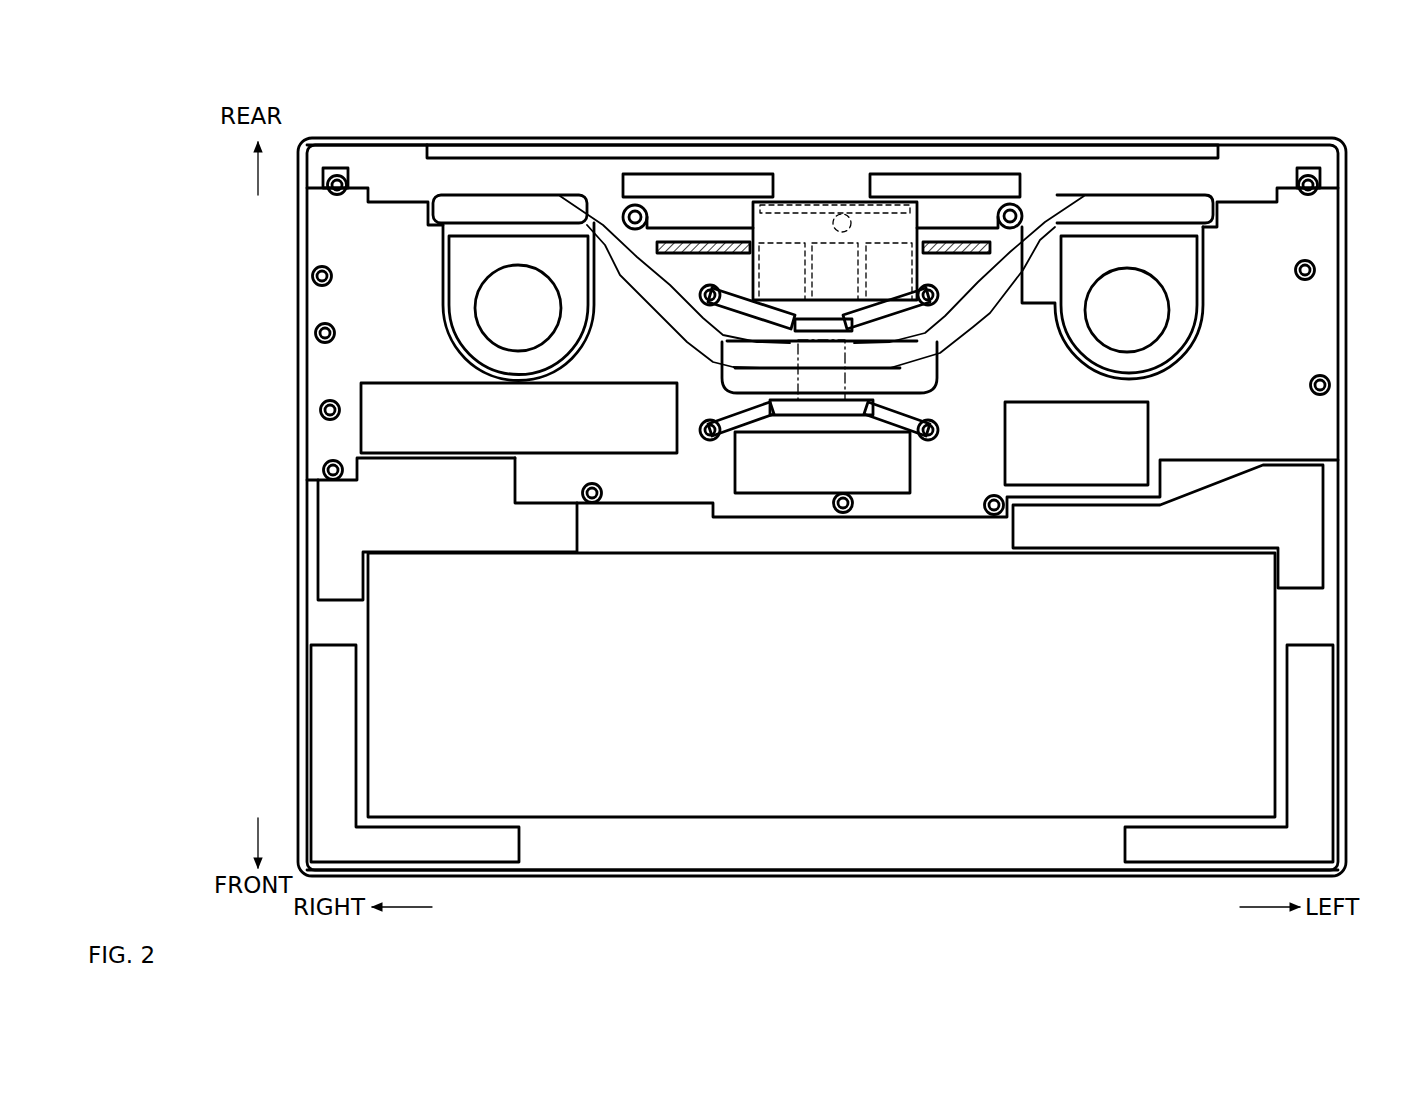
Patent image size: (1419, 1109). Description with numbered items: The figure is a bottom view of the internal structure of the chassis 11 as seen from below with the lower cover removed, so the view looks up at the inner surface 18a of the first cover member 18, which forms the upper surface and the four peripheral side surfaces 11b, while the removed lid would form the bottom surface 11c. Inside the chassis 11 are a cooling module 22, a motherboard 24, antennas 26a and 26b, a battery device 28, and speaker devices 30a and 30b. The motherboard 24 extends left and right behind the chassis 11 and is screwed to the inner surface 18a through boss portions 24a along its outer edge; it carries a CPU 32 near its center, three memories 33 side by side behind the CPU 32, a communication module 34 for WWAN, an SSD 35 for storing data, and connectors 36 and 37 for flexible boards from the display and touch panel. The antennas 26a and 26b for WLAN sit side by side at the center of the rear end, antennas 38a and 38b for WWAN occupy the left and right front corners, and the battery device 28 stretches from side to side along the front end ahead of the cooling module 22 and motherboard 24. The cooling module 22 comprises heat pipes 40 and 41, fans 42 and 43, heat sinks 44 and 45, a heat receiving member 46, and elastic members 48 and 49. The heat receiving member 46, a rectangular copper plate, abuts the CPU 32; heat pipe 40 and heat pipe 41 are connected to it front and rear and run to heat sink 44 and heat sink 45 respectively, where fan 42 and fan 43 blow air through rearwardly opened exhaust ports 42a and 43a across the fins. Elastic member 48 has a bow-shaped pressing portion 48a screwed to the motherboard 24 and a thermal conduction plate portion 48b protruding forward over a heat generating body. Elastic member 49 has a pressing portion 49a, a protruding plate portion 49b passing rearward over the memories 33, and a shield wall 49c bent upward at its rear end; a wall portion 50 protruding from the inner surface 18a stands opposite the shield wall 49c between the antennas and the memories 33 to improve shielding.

The chassis 11 is at (303, 118).
The peripheral side surfaces 11b is at (318, 622).
The bottom surface 11c is at (381, 141).
The first cover member 18 is at (1256, 136).
The inner surface 18a is at (818, 868).
The cooling module 22 is at (693, 466).
The motherboard 24 is at (345, 307).
The boss portion 24a is at (1318, 185).
The antenna 26a is at (710, 186).
The antenna 26b is at (960, 186).
The battery device 28 is at (940, 785).
The speaker device 30a is at (335, 522).
The speaker device 30b is at (1310, 512).
The CPU 32 is at (838, 372).
The memory 33 is at (860, 205).
The communication module 34 is at (1077, 466).
The SSD 35 is at (372, 438).
The connector 36 is at (660, 240).
The connector 37 is at (966, 240).
The antenna 38a is at (470, 848).
The antenna 38b is at (1185, 850).
The heat pipe 40 is at (600, 222).
The heat pipe 41 is at (1060, 214).
The fan 42 is at (468, 306).
The exhaust port 42a is at (463, 236).
The fan 43 is at (1182, 298).
The exhaust port 43a is at (1175, 236).
The heat sink 44 is at (515, 236).
The heat sink 45 is at (1130, 236).
The heat receiving member 46 is at (930, 392).
The elastic member 48 is at (900, 432).
The pressing portion 48a is at (795, 408).
The thermal conduction plate portion 48b is at (755, 476).
The elastic member 49 is at (738, 288).
The pressing portion 49a is at (955, 332).
The protruding plate portion 49b is at (883, 252).
The shield wall 49c is at (817, 250).
The wall portion 50 is at (840, 213).